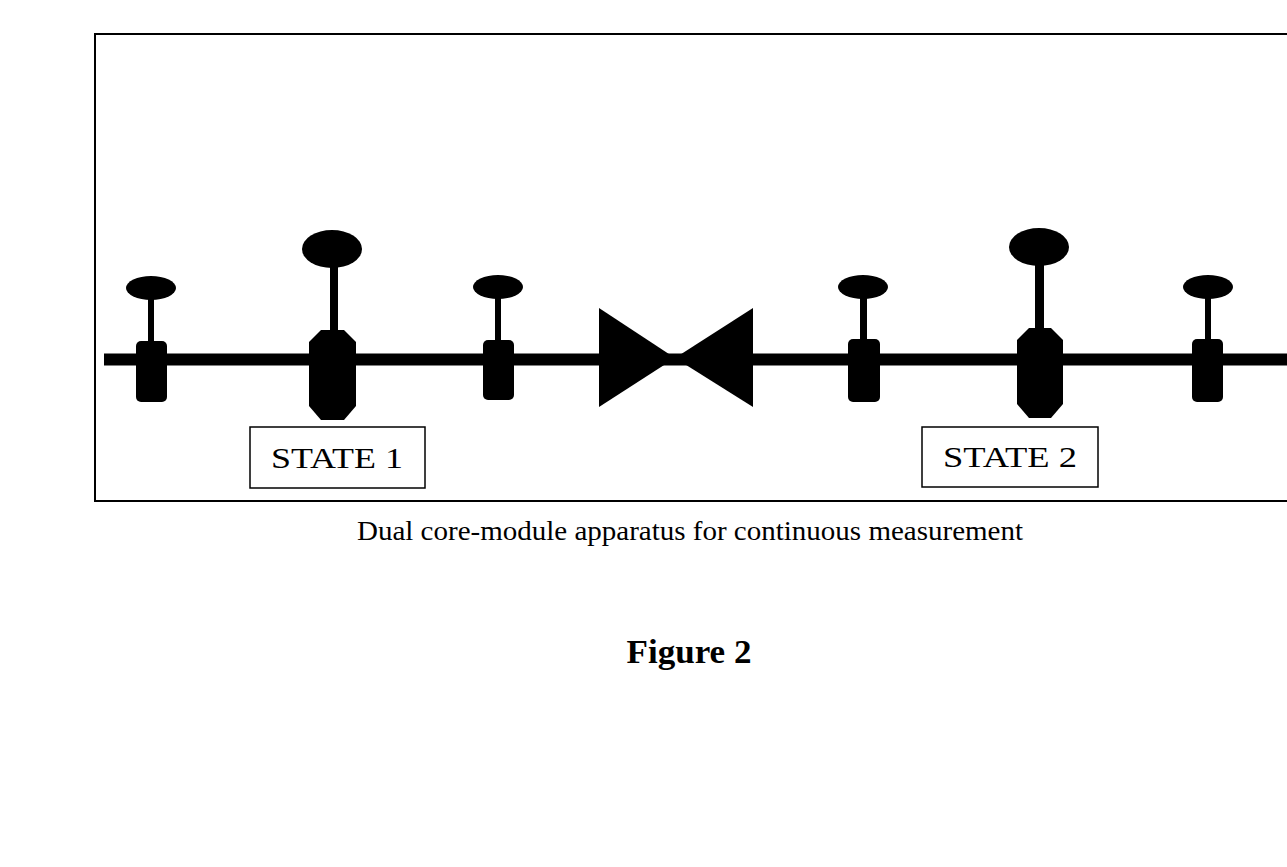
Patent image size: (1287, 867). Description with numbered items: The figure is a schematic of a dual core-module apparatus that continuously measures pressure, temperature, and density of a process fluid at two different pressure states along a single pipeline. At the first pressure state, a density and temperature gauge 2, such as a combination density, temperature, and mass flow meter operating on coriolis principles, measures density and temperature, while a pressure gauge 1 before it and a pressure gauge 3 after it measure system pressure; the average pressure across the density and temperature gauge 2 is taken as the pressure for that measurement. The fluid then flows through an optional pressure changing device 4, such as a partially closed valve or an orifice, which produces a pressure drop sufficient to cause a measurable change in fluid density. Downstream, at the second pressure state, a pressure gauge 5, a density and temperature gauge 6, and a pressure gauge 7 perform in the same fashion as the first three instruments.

The pressure gauge 1 is at (155, 287).
The density and temperature gauge 2 is at (339, 266).
The pressure gauge 3 is at (498, 285).
The pressure changing device 4 is at (676, 302).
The pressure gauge 5 is at (862, 287).
The density and temperature gauge 6 is at (1038, 260).
The pressure gauge 7 is at (1208, 287).